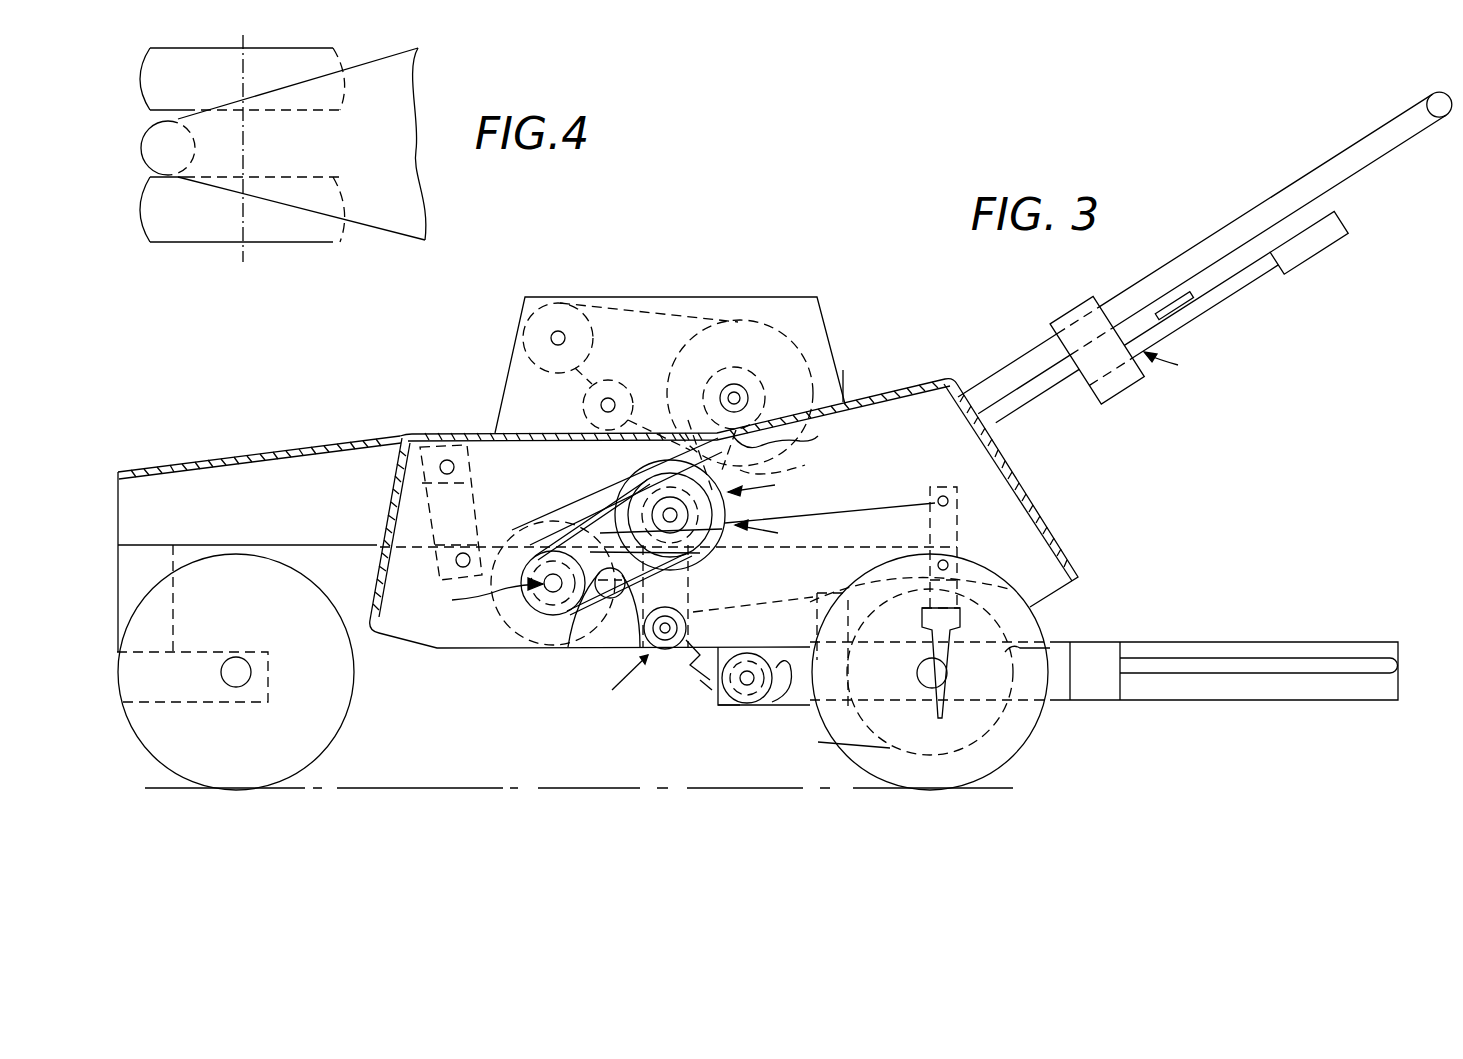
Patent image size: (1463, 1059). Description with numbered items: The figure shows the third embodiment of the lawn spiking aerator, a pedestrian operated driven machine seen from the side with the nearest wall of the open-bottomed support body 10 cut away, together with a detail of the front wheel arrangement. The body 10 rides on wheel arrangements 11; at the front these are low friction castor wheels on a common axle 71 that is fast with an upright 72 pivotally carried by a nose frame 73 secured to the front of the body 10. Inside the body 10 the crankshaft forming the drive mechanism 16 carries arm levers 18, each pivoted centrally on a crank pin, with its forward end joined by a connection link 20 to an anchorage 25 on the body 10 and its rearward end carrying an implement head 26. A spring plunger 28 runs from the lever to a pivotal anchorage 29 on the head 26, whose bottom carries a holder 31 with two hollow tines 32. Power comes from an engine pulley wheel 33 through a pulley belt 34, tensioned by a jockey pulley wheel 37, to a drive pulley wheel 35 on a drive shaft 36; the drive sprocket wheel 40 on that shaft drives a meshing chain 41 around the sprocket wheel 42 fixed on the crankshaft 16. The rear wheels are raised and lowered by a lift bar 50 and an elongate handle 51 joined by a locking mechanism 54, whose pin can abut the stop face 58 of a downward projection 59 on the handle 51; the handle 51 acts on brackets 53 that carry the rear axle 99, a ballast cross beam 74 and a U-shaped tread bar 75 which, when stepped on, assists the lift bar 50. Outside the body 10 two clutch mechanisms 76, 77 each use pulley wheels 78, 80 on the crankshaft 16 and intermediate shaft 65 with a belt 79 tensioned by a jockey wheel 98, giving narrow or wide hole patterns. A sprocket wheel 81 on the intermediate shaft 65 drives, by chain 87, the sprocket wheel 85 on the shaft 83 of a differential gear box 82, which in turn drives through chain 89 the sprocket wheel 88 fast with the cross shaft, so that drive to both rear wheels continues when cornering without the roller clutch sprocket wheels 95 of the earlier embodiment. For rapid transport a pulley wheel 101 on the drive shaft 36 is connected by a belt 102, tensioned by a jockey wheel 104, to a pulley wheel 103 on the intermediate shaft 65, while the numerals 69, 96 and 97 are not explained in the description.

In FIG. 3, the support body 10 is at (1018, 470).
In FIG. 4, the wheel arrangement 11 is at (312, 48).
In FIG. 3, the wheel arrangement 11 is at (333, 730).
In FIG. 3, the drive mechanism 16 is at (484, 597).
In FIG. 3, the arm lever 18 is at (770, 650).
In FIG. 3, the connection link 20 is at (430, 498).
In FIG. 3, the anchorage 25 is at (418, 440).
In FIG. 3, the implement head 26 is at (960, 547).
In FIG. 3, the spring plunger 28 is at (870, 505).
In FIG. 3, the pivotal anchorage 29 is at (950, 501).
In FIG. 3, the holder 31 is at (995, 594).
In FIG. 3, the tine 32 is at (950, 676).
In FIG. 3, the engine pulley wheel 33 is at (565, 305).
In FIG. 3, the pulley belt 34 is at (652, 310).
In FIG. 3, the drive pulley wheel 35 is at (782, 299).
In FIG. 3, the drive shaft 36 is at (740, 385).
In FIG. 3, the jockey pulley wheel 37 is at (583, 394).
In FIG. 3, the drive sprocket wheel 40 is at (765, 348).
In FIG. 3, the meshing chain 41 is at (560, 487).
In FIG. 3, the sprocket wheel 42 is at (513, 530).
In FIG. 3, the lift bar 50 is at (1390, 146).
In FIG. 3, the elongate handle 51 is at (1268, 272).
In FIG. 3, the bracket 53 is at (890, 727).
In FIG. 3, the locking mechanism 54 is at (1128, 389).
In FIG. 3, the stop face 58 is at (1175, 363).
In FIG. 3, the downward projection 59 is at (1205, 322).
In FIG. 3, the intermediate shaft 65 is at (700, 512).
In FIG. 3, the mounting plate 69 is at (720, 706).
In FIG. 4, the common axle 71 is at (244, 152).
In FIG. 3, the common axle 71 is at (238, 688).
In FIG. 4, the upright 72 is at (142, 152).
In FIG. 3, the upright 72 is at (150, 548).
In FIG. 4, the nose frame 73 is at (377, 228).
In FIG. 3, the nose frame 73 is at (237, 455).
In FIG. 3, the ballast cross beam 74 is at (1108, 698).
In FIG. 3, the tread bar 75 is at (1352, 672).
In FIG. 3, the clutch mechanism 76 is at (766, 481).
In FIG. 3, the clutch mechanism 77 is at (771, 531).
In FIG. 3, the pulley wheel 78 is at (522, 603).
In FIG. 3, the belt 79 is at (614, 635).
In FIG. 3, the pulley wheel 80 is at (700, 560).
In FIG. 3, the sprocket wheel 81 is at (770, 468).
In FIG. 3, the differential gear box 82 is at (608, 642).
In FIG. 3, the shaft 83 is at (690, 628).
In FIG. 3, the sprocket wheel 85 is at (685, 648).
In FIG. 3, the chain 87 is at (690, 590).
In FIG. 3, the sprocket wheel 88 is at (800, 708).
In FIG. 3, the chain 89 is at (712, 690).
In FIG. 3, the sprocket wheel 95 is at (748, 703).
In FIG. 3, the spring 96 is at (841, 752).
In FIG. 3, the hitch 97 is at (1045, 647).
In FIG. 3, the jockey wheel 98 is at (528, 630).
In FIG. 3, the axle 99 is at (935, 705).
In FIG. 3, the pulley wheel 101 is at (857, 376).
In FIG. 3, the belt 102 is at (800, 440).
In FIG. 3, the pulley wheel 103 is at (633, 490).
In FIG. 3, the jockey wheel 104 is at (658, 410).